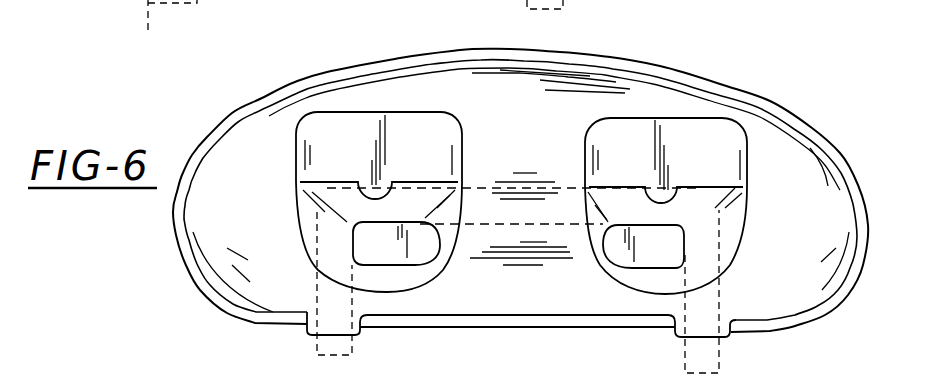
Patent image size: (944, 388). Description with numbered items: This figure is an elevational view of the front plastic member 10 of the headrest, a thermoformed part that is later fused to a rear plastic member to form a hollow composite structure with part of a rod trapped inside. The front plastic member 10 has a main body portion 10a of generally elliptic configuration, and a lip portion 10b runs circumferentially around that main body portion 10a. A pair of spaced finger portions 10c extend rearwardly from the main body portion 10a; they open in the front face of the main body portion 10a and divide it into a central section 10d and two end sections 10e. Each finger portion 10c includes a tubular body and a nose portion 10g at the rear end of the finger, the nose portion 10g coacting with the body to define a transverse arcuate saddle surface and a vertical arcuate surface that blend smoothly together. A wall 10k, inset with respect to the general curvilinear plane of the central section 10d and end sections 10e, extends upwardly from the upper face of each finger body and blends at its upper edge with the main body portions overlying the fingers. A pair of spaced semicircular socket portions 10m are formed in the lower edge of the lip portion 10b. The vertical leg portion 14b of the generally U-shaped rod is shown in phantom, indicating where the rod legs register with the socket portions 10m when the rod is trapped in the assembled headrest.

The front plastic member 10 is at (787, 110).
The main body portion 10a is at (559, 137).
The lip portion 10b is at (394, 62).
The finger portions 10c is at (320, 103).
The central section 10d is at (544, 306).
The end sections 10e is at (262, 222).
The nose portion 10g is at (380, 257).
The wall 10k is at (362, 157).
The socket portions 10m is at (340, 322).
The vertical leg portion 14b is at (147, 30).